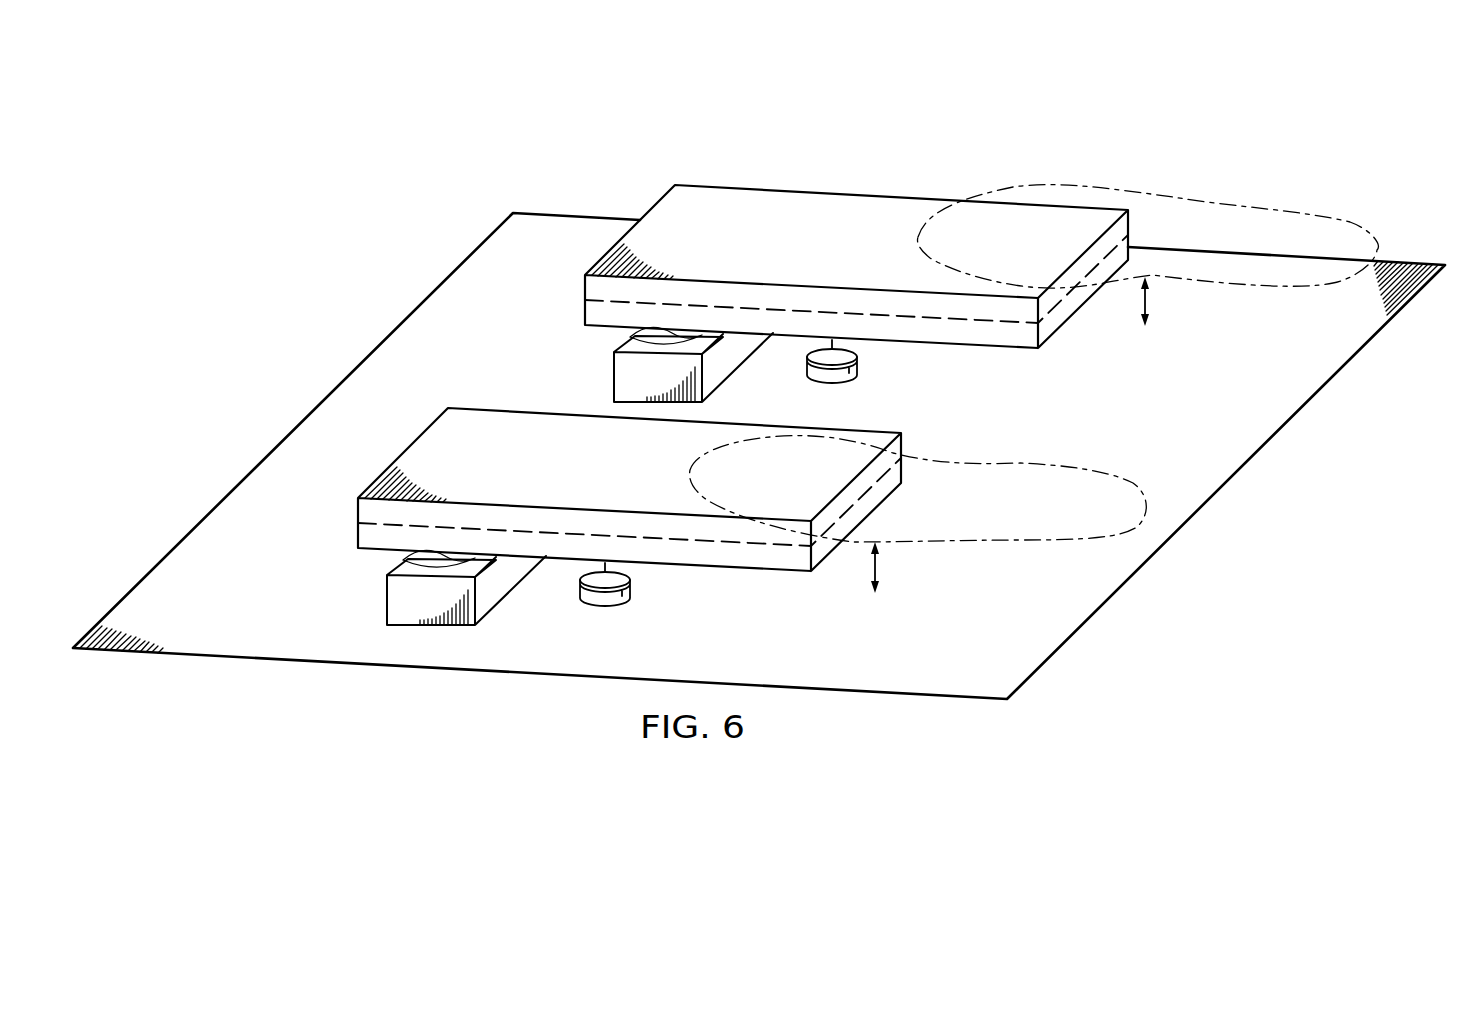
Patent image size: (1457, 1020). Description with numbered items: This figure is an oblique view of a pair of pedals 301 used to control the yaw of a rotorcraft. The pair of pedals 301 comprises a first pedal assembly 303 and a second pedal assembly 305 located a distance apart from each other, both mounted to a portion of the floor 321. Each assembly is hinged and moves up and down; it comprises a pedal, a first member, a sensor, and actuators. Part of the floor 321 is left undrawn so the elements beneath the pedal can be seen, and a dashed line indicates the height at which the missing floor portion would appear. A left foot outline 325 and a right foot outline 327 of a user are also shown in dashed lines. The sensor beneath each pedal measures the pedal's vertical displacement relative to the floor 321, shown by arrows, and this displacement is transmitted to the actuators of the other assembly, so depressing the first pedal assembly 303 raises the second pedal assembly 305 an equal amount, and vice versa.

The pair of pedals 301 is at (425, 136).
The first pedal assembly 303 is at (405, 421).
The second pedal assembly 305 is at (632, 198).
The floor 321 is at (1240, 437).
The left foot outline 325 is at (1040, 540).
The right foot outline 327 is at (1185, 207).